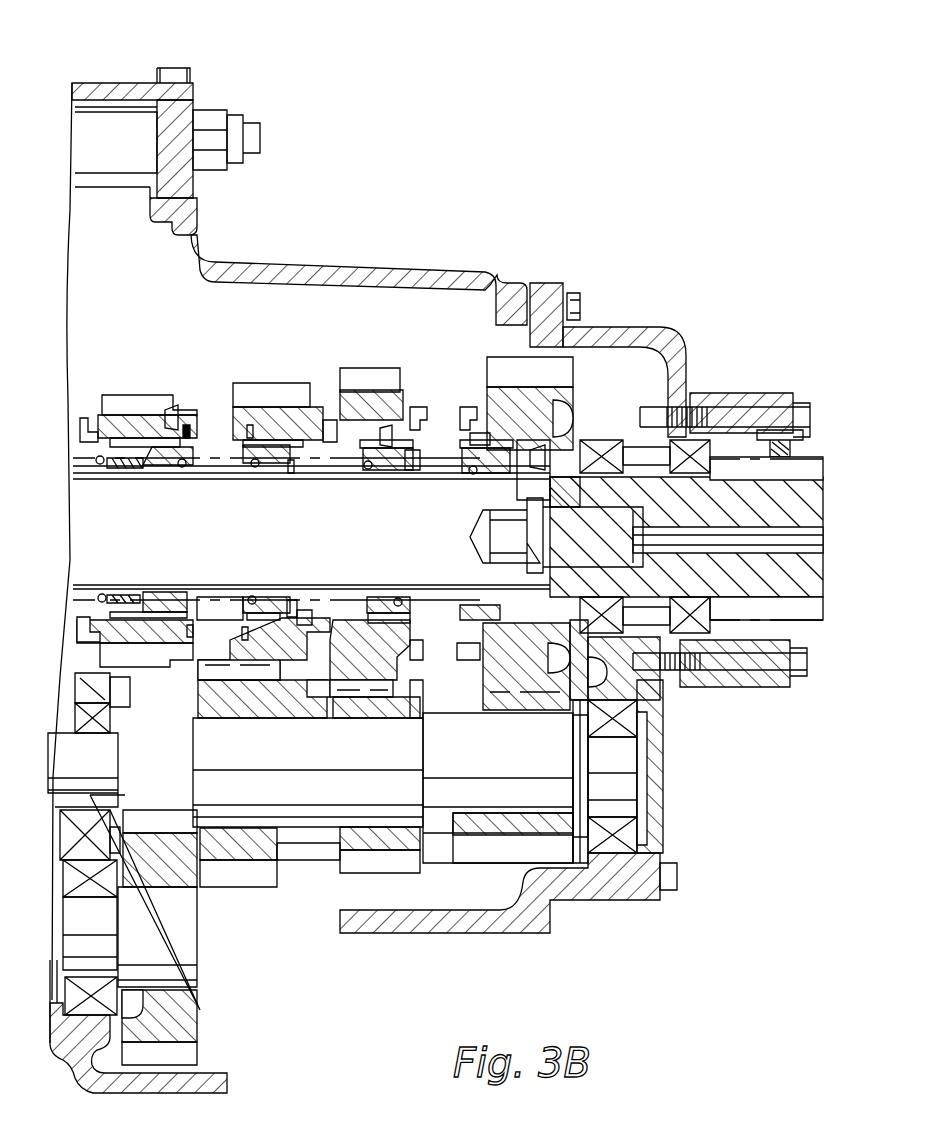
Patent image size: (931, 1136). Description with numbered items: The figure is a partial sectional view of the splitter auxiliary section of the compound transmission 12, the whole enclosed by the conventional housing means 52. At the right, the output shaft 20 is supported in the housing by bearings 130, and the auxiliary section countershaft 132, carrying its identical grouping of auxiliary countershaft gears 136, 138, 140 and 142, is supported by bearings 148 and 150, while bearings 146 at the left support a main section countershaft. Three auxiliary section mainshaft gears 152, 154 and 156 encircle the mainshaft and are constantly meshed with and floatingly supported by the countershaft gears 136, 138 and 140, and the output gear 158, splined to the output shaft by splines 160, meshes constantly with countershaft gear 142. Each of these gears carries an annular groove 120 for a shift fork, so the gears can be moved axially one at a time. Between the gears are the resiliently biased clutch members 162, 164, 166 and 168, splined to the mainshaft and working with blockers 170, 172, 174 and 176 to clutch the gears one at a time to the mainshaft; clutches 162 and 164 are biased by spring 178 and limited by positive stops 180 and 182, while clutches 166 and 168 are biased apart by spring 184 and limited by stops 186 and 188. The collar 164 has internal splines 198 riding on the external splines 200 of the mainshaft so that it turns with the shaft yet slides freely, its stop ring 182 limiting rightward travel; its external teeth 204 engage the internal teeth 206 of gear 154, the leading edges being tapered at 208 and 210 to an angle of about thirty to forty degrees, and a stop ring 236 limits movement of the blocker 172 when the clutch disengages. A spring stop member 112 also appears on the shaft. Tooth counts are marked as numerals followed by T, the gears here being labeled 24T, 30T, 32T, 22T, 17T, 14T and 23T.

The compound transmission 12 is at (345, 76).
The housing means 52 is at (280, 268).
The output shaft 20 is at (726, 516).
The bearings 130 is at (704, 438).
The bearings 150 is at (627, 720).
The external splines 200 is at (210, 468).
The auxiliary section mainshaft gear 152 is at (126, 415).
The auxiliary section mainshaft gear 154 is at (245, 405).
The auxiliary section mainshaft gear 156 is at (353, 390).
The output gear 158 is at (500, 392).
The splines 160 is at (600, 440).
The clutch member 162 is at (158, 463).
The clutch collar 164 is at (280, 462).
The clutch member 166 is at (368, 467).
The clutch member 168 is at (478, 468).
The blocker 170 is at (182, 438).
The blocker ring 172 is at (247, 428).
The blocker 174 is at (412, 462).
The blocker 176 is at (472, 441).
The annular groove 120 is at (90, 418).
The external teeth 204 is at (170, 410).
The internal teeth 206 is at (108, 465).
The spring stop member 112 is at (128, 470).
The positive stop 180 is at (140, 590).
The spring 178 is at (193, 597).
The internal splines 198 is at (262, 595).
The stop ring 182 is at (290, 595).
The taper 208 is at (302, 615).
The taper 210 is at (307, 620).
The stop 186 is at (370, 597).
The spring 184 is at (420, 605).
The stop 188 is at (500, 585).
The stop ring 236 is at (242, 633).
The tooth count 24T is at (135, 642).
The tooth count 30T is at (339, 668).
The tooth count 32T is at (535, 741).
The auxiliary section countershaft gear 140 is at (412, 690).
The auxiliary section countershaft gear 142 is at (468, 700).
The auxiliary section countershaft 132 is at (518, 764).
The tooth count 22T is at (238, 857).
The tooth count 17T is at (383, 845).
The tooth count 14T is at (490, 830).
The auxiliary section countershaft gear 138 is at (265, 845).
The bearings 146 is at (103, 735).
The auxiliary section countershaft gear 136 is at (175, 860).
The bearings 148 is at (232, 940).
The tooth count 23T is at (160, 1027).